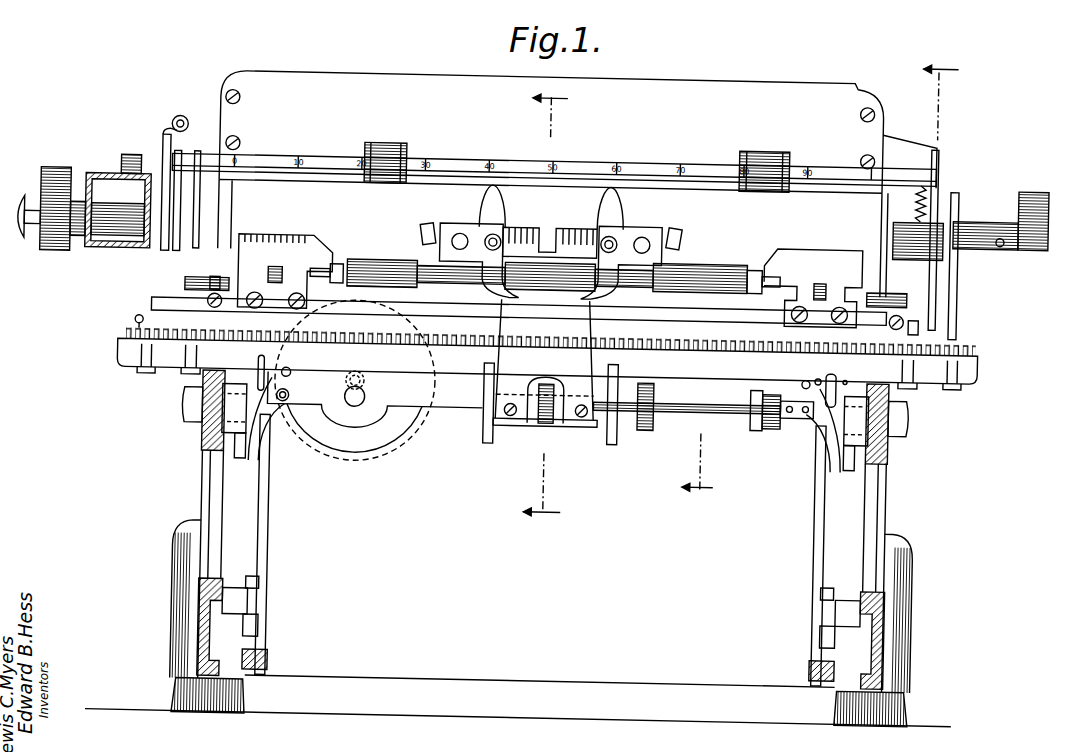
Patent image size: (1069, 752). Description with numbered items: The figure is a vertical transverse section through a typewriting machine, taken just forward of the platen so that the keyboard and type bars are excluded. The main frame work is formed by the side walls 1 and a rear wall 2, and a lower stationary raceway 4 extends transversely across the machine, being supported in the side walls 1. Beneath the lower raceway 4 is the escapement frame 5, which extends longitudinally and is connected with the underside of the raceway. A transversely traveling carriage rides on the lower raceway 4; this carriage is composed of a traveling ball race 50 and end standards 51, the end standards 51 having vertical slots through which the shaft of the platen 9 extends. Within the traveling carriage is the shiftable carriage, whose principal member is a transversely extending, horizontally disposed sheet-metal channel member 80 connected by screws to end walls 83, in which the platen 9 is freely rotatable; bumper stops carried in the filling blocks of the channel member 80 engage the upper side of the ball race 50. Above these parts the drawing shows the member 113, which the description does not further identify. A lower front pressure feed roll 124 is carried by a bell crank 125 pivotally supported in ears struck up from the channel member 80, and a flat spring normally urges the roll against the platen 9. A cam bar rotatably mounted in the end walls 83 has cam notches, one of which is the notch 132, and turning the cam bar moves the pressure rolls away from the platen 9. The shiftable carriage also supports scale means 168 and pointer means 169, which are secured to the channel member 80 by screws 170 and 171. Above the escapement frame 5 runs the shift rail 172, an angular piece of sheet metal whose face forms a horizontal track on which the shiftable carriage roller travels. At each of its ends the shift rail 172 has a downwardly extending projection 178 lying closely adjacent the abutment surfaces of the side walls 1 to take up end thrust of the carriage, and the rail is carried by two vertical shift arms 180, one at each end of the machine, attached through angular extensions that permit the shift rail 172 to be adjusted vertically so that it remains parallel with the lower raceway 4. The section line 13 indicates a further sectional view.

The side walls 1 is at (205, 485).
The rear wall 2 is at (549, 684).
The lower stationary raceway 4 is at (125, 354).
The escapement frame 5 is at (490, 444).
The platen 9 is at (546, 307).
The section line 13- 13 is at (820, 278).
The traveling ball race 50 is at (134, 329).
The end standards 51 is at (170, 289).
The channel member 80 is at (425, 311).
The end walls 83 is at (158, 264).
The cover plate 113 is at (409, 89).
The lower front pressure feed roll 124 is at (397, 290).
The bell crank 125 is at (345, 286).
The cam notch 132 is at (181, 310).
The scale means 168 is at (550, 281).
The pointer means 169 is at (218, 285).
The screw 170 is at (256, 313).
The screw 171 is at (212, 314).
The shift rail 172 is at (448, 410).
The downwardly extending projection 178 is at (246, 462).
The vertical shift arms 180 is at (272, 519).